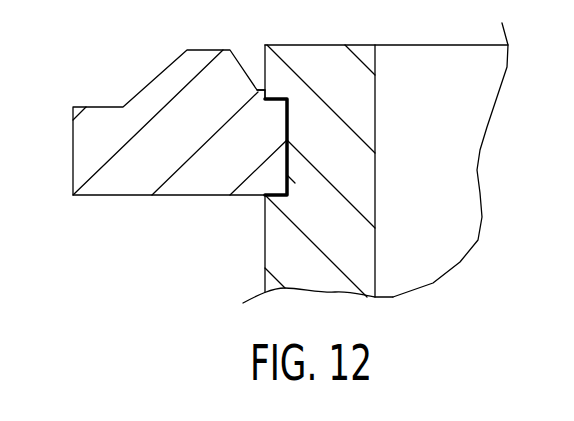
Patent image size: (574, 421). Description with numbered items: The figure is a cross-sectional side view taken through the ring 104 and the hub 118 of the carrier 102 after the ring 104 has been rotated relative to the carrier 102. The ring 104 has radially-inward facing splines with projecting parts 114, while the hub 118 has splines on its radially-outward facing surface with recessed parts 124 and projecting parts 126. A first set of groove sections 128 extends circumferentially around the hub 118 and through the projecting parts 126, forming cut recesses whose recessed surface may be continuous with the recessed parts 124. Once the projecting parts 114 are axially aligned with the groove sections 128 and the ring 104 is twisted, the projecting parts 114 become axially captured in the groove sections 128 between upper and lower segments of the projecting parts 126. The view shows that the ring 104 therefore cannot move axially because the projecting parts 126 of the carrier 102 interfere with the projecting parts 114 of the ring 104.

The carrier 102 is at (458, 175).
The ring 104 is at (86, 151).
The projecting parts 114 is at (268, 118).
The hub 118 is at (352, 65).
The recessed parts 124 is at (285, 180).
The projecting parts 126 is at (273, 75).
The groove sections 128 is at (302, 170).